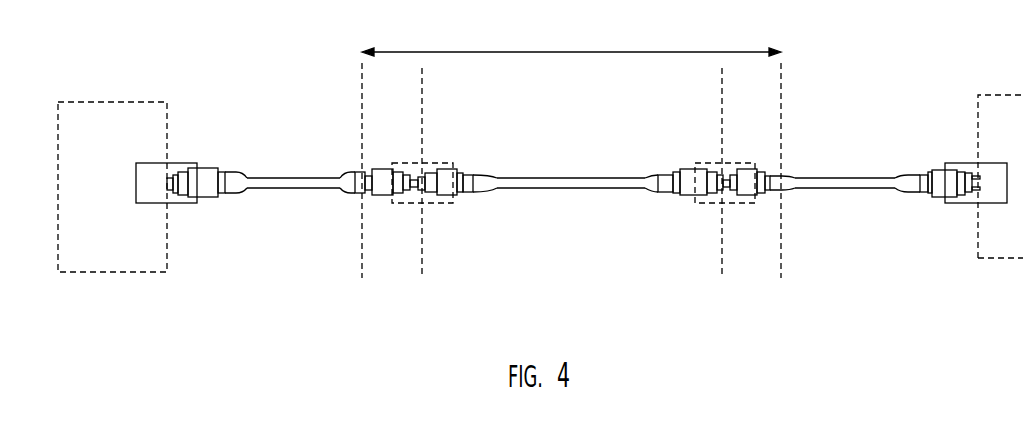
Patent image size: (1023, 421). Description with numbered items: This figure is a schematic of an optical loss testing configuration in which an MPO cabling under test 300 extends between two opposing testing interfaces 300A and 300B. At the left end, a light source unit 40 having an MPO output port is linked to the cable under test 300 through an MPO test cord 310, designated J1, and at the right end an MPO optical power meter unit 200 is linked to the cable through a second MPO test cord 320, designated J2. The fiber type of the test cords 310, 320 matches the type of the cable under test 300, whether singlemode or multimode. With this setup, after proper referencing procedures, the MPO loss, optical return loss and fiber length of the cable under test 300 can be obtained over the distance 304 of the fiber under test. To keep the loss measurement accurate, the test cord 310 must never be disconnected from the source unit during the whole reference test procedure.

The light source unit 40 is at (118, 268).
The MPO optical power meter unit 200 is at (990, 262).
The MPO test cord (J1) 310 is at (265, 178).
The testing interface 300A is at (422, 258).
The MPO cabling under test 300 is at (585, 190).
The testing interface 300B is at (720, 267).
The MPO test cord (J2) 320 is at (830, 178).
The distance 304 is at (662, 52).